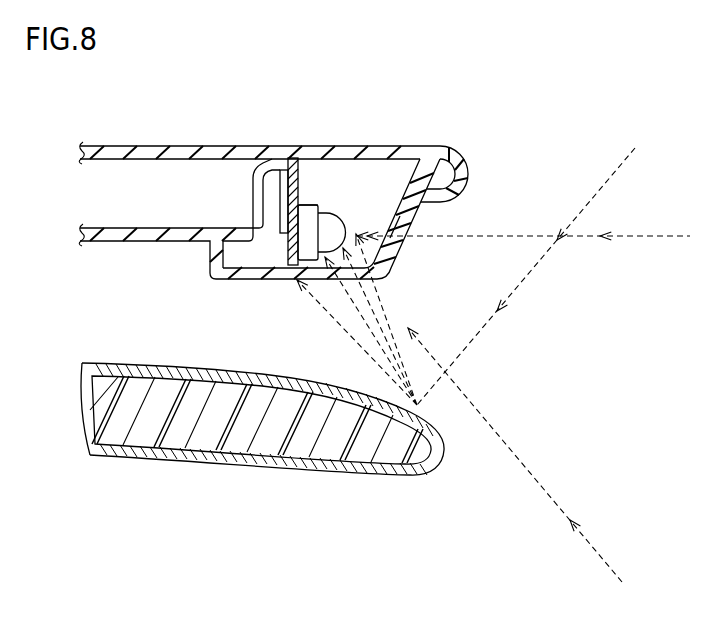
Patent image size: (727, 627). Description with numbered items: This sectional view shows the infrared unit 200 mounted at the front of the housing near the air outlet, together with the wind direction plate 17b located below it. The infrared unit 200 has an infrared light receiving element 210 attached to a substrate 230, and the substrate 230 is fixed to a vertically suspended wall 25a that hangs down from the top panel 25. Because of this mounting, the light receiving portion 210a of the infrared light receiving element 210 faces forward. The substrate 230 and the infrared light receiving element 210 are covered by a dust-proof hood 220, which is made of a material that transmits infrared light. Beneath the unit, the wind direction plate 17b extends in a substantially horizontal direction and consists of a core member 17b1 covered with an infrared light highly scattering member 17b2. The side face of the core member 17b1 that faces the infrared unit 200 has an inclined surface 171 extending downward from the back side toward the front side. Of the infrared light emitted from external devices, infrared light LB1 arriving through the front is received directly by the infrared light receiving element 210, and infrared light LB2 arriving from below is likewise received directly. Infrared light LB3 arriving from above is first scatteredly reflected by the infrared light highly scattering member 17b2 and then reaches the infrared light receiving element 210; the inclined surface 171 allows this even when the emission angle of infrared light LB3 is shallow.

The infrared unit 200 is at (506, 139).
The top panel 25 is at (424, 147).
The vertically suspended wall 25a is at (250, 178).
The dust-proof hood 220 is at (395, 228).
The substrate 230 is at (297, 157).
The infrared light receiving element 210 is at (344, 228).
The light receiving portion 210a is at (327, 207).
The inclined surface 171 is at (288, 373).
The wind direction plate 17b is at (256, 466).
The core member 17b1 is at (302, 440).
The infrared light highly scattering member 17b2 is at (280, 521).
The infrared light LB1 is at (668, 241).
The infrared light LB2 is at (537, 477).
The infrared light LB3 is at (523, 283).